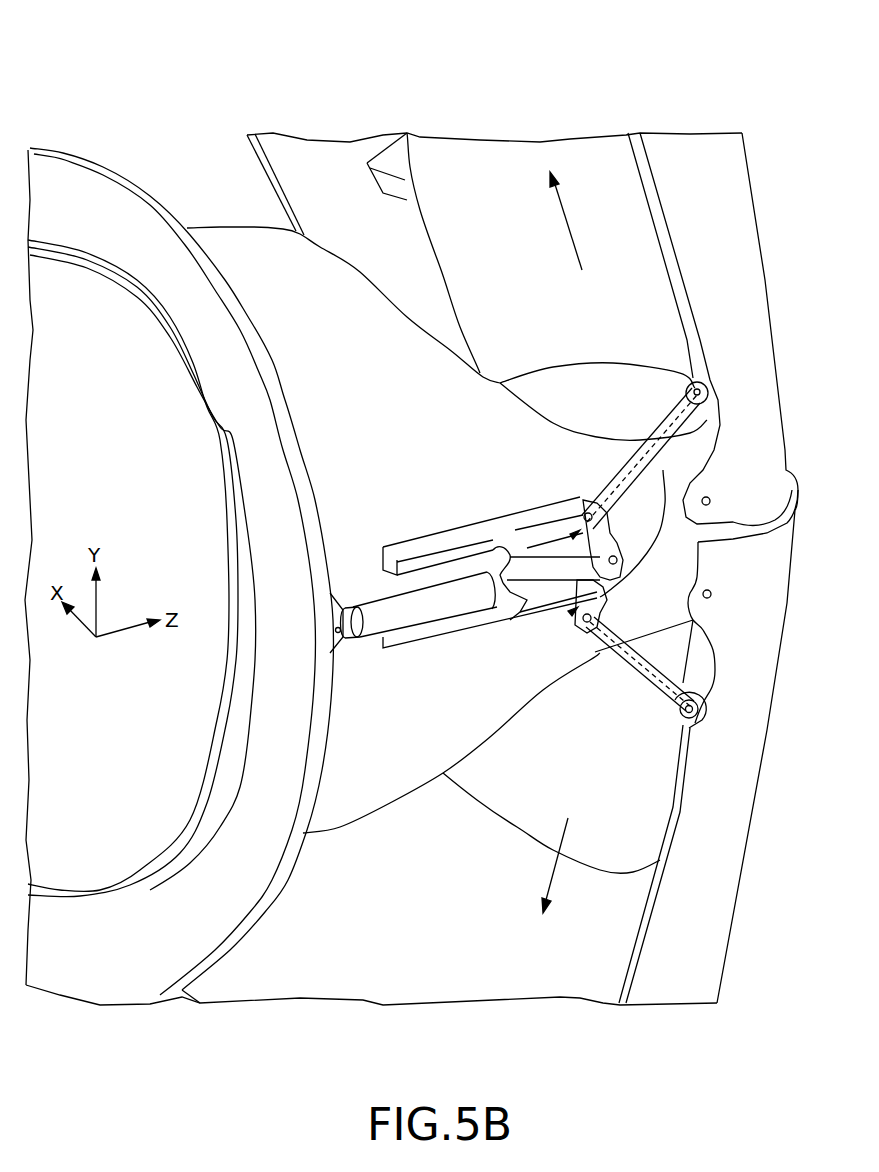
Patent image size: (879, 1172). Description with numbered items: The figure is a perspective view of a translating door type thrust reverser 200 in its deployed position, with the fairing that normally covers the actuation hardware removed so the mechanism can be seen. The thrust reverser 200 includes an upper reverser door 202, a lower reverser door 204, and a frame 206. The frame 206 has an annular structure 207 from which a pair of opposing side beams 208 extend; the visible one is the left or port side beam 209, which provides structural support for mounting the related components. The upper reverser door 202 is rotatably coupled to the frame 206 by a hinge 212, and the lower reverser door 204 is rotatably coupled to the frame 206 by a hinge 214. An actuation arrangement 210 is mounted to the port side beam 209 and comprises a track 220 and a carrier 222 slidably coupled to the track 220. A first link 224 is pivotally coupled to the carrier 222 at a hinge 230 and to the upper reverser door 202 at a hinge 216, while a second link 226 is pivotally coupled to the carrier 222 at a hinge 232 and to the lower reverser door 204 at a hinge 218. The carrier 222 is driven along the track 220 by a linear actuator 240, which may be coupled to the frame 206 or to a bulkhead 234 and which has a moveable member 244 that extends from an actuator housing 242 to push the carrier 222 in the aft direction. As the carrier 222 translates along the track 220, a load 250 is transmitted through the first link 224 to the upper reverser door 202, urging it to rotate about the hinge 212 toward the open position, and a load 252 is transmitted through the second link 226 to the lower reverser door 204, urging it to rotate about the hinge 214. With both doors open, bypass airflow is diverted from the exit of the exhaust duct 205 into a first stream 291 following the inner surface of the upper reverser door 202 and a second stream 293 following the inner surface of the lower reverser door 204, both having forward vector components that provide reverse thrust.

The thrust reverser 200 is at (674, 84).
The upper reverser door 202 is at (740, 215).
The lower reverser door 204 is at (717, 890).
The exhaust duct 205 is at (144, 446).
The frame 206 is at (322, 317).
The annular structure 207 is at (361, 437).
The pair of opposing side beams 208 is at (683, 587).
The left side beam 209 is at (674, 617).
The actuation arrangement 210 is at (418, 425).
The hinge 212 is at (709, 498).
The hinge 214 is at (709, 598).
The hinge 216 is at (705, 382).
The hinge 218 is at (700, 720).
The track 220 is at (480, 533).
The carrier 222 is at (553, 533).
The first link 224 is at (636, 446).
The second link 226 is at (645, 680).
The hinge 230 is at (587, 507).
The hinge 232 is at (580, 648).
The bulkhead 234 is at (265, 908).
The linear actuator 240 is at (428, 600).
The actuator housing 242 is at (452, 607).
The moveable member 244 is at (533, 583).
The load 250 is at (687, 437).
The load 252 is at (668, 680).
The first stream 291 is at (578, 236).
The second stream 293 is at (553, 863).